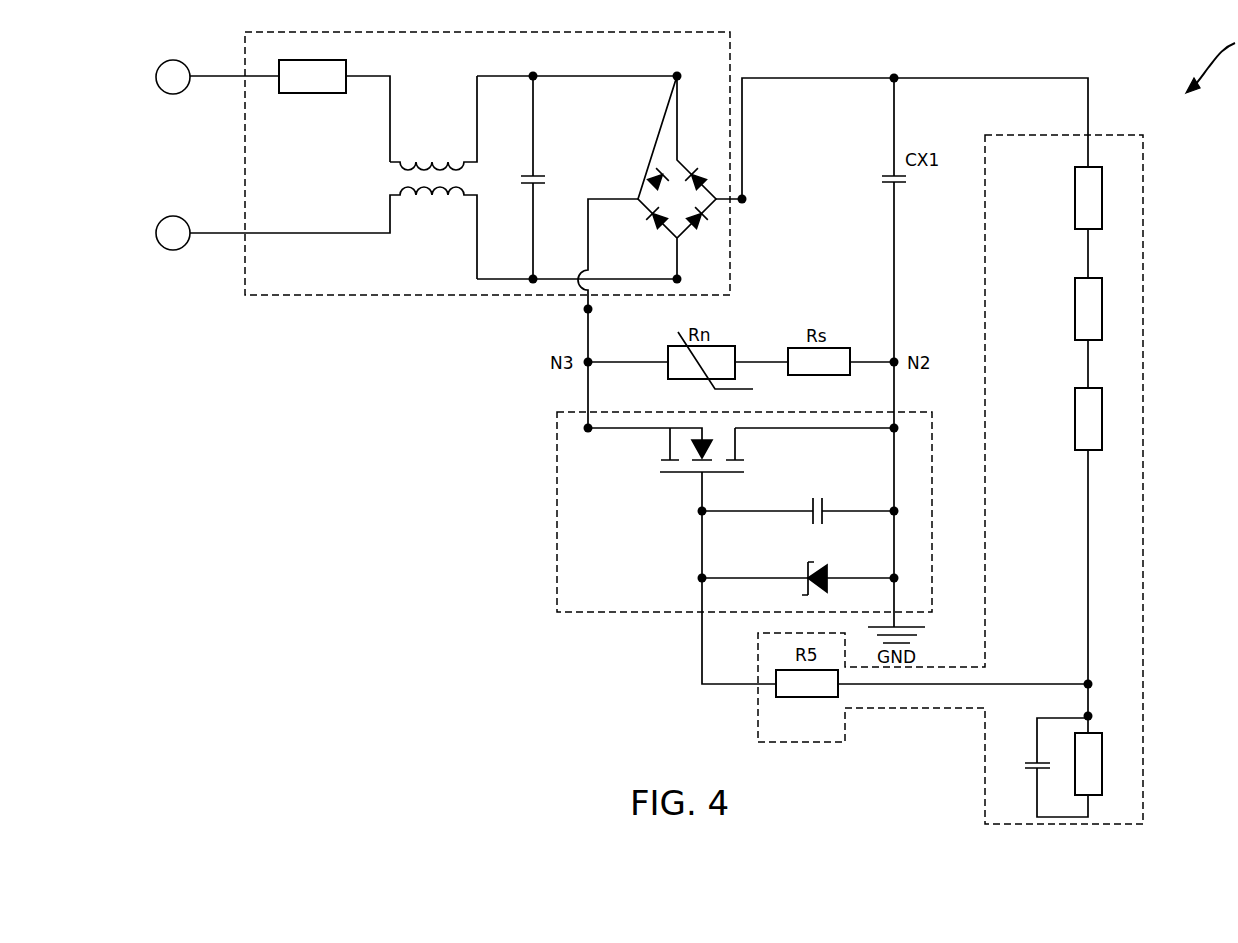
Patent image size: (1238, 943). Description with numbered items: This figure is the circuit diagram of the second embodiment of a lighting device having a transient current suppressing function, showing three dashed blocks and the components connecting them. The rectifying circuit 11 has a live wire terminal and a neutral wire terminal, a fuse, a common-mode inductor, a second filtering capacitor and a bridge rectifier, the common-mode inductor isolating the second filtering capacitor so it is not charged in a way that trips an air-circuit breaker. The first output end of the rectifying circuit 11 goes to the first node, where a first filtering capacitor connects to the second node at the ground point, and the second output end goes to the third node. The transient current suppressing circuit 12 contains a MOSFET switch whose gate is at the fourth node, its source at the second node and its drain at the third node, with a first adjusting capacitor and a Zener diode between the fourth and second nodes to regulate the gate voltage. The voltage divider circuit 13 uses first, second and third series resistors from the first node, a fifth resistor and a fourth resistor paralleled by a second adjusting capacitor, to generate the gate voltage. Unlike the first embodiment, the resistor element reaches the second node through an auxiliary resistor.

The rectifying circuit 11 is at (244, 63).
The transient current suppressing circuit 12 is at (557, 492).
The voltage divider circuit 13 is at (1107, 134).